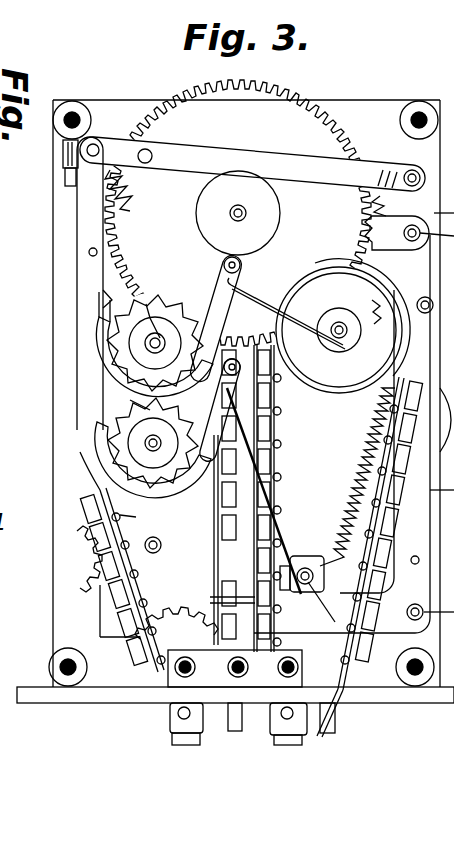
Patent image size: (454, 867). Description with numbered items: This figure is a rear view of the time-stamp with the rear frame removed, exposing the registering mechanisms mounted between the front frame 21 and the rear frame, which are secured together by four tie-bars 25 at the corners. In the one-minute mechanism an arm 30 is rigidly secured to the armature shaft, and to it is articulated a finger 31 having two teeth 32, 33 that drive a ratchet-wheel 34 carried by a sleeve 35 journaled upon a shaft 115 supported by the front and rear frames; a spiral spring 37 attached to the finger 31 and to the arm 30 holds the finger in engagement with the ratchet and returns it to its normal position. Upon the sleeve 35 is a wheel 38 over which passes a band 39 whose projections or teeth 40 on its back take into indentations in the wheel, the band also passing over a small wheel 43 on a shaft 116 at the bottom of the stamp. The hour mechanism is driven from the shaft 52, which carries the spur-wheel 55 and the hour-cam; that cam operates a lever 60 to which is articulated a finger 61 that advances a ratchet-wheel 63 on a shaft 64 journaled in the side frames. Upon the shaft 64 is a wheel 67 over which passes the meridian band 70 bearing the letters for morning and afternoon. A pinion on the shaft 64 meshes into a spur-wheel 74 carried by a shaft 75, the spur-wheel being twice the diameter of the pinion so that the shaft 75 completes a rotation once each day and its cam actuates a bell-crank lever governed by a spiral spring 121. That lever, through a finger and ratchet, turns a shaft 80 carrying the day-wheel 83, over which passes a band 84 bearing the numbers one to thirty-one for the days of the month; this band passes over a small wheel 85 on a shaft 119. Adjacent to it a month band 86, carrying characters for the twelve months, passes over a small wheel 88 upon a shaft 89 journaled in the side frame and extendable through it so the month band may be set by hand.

The front frame 21 is at (235, 401).
The tie-bars 25 is at (72, 112).
The arm 30 is at (227, 158).
The finger 31 is at (90, 200).
The tooth 32 is at (105, 370).
The tooth 33 is at (226, 358).
The ratchet-wheel 34 is at (155, 343).
The sleeve 35 is at (144, 343).
The spiral spring 37 is at (134, 190).
The wheel 38 is at (110, 302).
The band 39 is at (128, 521).
The projections or teeth 40 is at (132, 583).
The small wheel 43 is at (186, 748).
The shaft 52 is at (230, 213).
The spur-wheel 55 is at (262, 97).
The lever 60 is at (370, 232).
The finger 61 is at (90, 433).
The ratchet-wheel 63 is at (153, 443).
The shaft 64 is at (160, 443).
The wheel 67 is at (110, 407).
The band 70 is at (108, 521).
The spur-wheel 74 is at (96, 567).
The shaft 75 is at (161, 546).
The shaft 80 is at (346, 334).
The wheel 83 is at (343, 326).
The band 84 is at (276, 417).
The small wheel 85 is at (290, 746).
The band 86 is at (330, 700).
The small wheel 88 is at (305, 568).
The shaft 89 is at (336, 620).
The shaft 115 is at (158, 338).
The shaft 116 is at (182, 714).
The shaft 119 is at (282, 730).
The spiral spring 121 is at (366, 461).